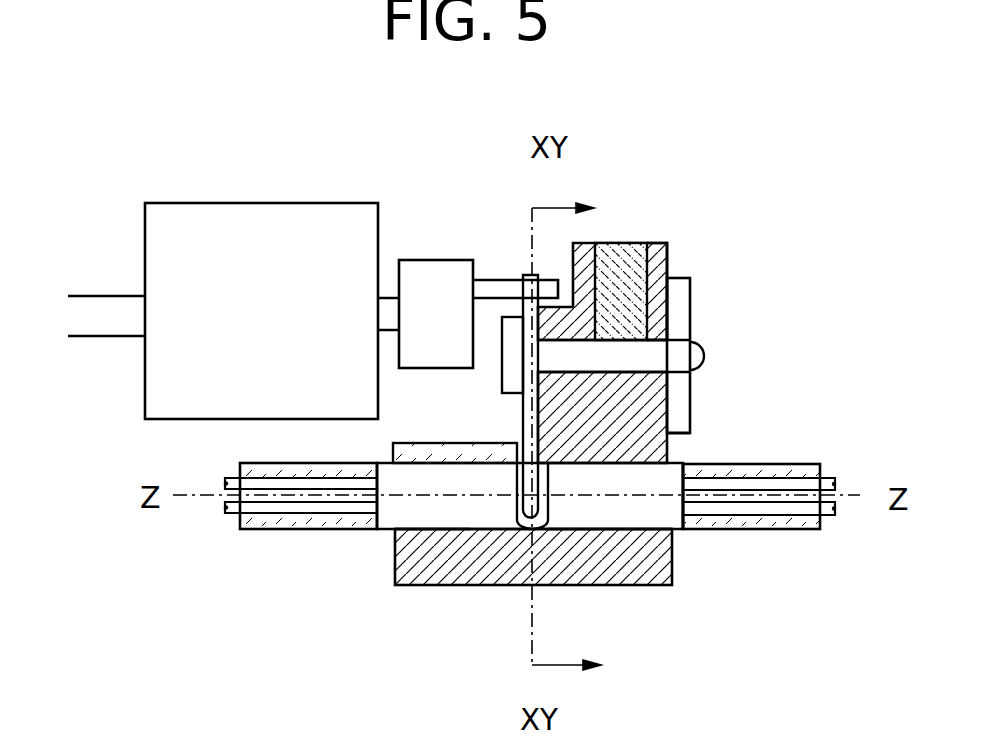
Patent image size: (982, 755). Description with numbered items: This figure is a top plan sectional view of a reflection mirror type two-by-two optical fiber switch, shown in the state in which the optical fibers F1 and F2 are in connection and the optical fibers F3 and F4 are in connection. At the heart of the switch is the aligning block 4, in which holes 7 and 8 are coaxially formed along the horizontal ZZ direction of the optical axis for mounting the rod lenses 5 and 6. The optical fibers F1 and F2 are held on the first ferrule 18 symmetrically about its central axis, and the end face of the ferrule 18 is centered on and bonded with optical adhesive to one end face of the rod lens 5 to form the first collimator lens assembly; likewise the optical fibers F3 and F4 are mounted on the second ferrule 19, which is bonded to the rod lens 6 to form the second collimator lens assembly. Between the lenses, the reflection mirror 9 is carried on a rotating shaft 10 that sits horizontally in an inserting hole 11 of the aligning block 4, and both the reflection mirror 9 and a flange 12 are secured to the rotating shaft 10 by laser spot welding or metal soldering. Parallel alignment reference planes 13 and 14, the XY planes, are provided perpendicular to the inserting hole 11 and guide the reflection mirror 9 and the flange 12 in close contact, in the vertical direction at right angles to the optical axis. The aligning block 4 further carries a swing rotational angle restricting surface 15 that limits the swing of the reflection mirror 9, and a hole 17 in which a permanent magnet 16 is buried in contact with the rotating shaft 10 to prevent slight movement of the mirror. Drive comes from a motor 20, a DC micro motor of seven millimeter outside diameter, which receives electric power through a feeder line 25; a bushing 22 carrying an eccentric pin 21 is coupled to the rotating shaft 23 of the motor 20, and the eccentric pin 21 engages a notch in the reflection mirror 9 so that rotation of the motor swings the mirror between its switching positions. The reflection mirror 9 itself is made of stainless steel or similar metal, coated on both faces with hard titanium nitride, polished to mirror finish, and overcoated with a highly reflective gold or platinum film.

The aligning block 4 is at (637, 563).
The rod lens 5 is at (387, 522).
The rod lens 6 is at (677, 530).
The hole 7 is at (473, 520).
The hole 8 is at (583, 520).
The reflection mirror 9 is at (523, 422).
The rotating shaft 10 is at (630, 368).
The inserting hole 11 is at (667, 402).
The flange 12 is at (692, 312).
The alignment reference plane 13 is at (540, 400).
The alignment reference plane 14 is at (673, 437).
The swing rotational angle restricting surface 15 is at (597, 283).
The permanent magnet 16 is at (633, 240).
The hole 17 is at (563, 307).
The first ferrule 18 is at (312, 530).
The second ferrule 19 is at (808, 464).
The motor 20 is at (277, 230).
The eccentric pin 21 is at (492, 288).
The bushing 22 is at (433, 285).
The rotating shaft 23 is at (384, 312).
The feeder line 25 is at (115, 333).
The optical fiber F1 is at (227, 482).
The optical fiber F2 is at (287, 515).
The optical fiber F3 is at (787, 463).
The optical fiber F4 is at (785, 520).